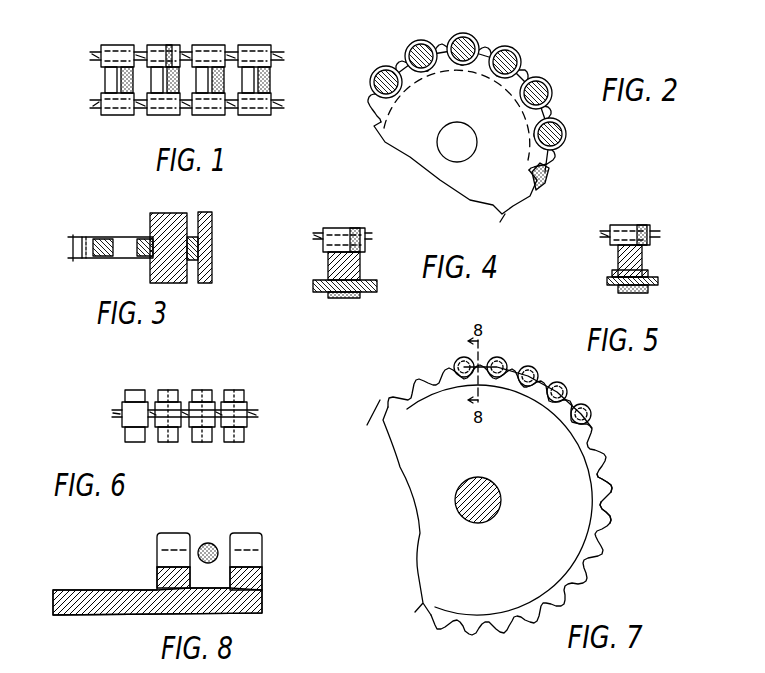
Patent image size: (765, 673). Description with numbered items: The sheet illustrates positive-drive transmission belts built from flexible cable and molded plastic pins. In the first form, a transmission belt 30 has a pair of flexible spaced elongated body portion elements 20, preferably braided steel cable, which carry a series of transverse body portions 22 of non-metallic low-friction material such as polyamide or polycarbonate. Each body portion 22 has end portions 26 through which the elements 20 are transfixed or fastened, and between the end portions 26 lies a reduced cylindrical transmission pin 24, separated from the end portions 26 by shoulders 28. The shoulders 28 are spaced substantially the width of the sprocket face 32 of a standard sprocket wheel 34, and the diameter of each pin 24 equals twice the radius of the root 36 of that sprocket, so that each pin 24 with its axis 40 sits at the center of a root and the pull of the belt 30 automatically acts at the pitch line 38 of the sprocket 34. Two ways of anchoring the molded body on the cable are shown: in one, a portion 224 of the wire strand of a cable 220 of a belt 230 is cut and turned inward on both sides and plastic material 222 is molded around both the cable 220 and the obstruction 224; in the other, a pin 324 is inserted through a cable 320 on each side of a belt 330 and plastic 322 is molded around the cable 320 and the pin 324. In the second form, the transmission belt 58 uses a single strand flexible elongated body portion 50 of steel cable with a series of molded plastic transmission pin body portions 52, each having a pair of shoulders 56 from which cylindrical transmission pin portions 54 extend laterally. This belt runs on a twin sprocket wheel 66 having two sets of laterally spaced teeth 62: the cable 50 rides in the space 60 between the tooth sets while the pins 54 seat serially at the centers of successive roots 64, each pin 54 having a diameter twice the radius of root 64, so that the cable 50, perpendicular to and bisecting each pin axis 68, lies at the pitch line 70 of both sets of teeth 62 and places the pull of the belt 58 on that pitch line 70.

In FIG. 1, the flexible elongated body portion elements 20 is at (147, 40).
In FIG. 1, the pin means body portion 22 is at (185, 41).
In FIG. 1, the cylindrical transmission pin 24 is at (272, 80).
In FIG. 1, the end portions 26 is at (256, 115).
In FIG. 1, the shoulders 28 is at (101, 61).
In FIG. 3, the shoulders 28 is at (150, 230).
In FIG. 1, the transmission belt 30 is at (118, 112).
In FIG. 3, the sprocket face 32 is at (73, 250).
In FIG. 2, the standard sprocket wheel 34 is at (467, 101).
In FIG. 3, the standard sprocket wheel 34 is at (125, 260).
In FIG. 2, the root 36 is at (550, 177).
In FIG. 2, the pitch line 38 is at (517, 67).
In FIG. 2, the axis 40 is at (550, 82).
In FIG. 6, the single strand flexible elongated body portion 50 is at (258, 413).
In FIG. 8, the single strand flexible elongated body portion 50 is at (207, 543).
In FIG. 7, the single strand flexible elongated body portion 50 is at (464, 367).
In FIG. 6, the transmission pin body portion 52 is at (122, 420).
In FIG. 7, the transmission pin body portion 52 is at (591, 418).
In FIG. 6, the cylindrical transmission pin portions 54 is at (137, 390).
In FIG. 7, the cylindrical transmission pin portions 54 is at (564, 395).
In FIG. 6, the shoulders 56 is at (143, 442).
In FIG. 6, the transmission belt 58 is at (209, 387).
In FIG. 8, the space 60 is at (224, 545).
In FIG. 7, the space 60 is at (608, 541).
In FIG. 8, the teeth 62 is at (162, 540).
In FIG. 7, the teeth 62 is at (608, 457).
In FIG. 7, the roots 64 is at (607, 476).
In FIG. 7, the twin sprocket wheel 66 is at (602, 580).
In FIG. 6, the axis 68 is at (236, 442).
In FIG. 7, the pitch line 70 is at (610, 512).
In FIG. 4, the cable 220 is at (313, 285).
In FIG. 4, the plastic material 222 is at (360, 266).
In FIG. 4, the torn portion of wire strand 224 is at (340, 298).
In FIG. 4, the belt 230 is at (318, 265).
In FIG. 5, the cable 320 is at (658, 281).
In FIG. 5, the plastic 322 is at (618, 258).
In FIG. 5, the pin 324 is at (628, 293).
In FIG. 5, the belt 330 is at (658, 261).